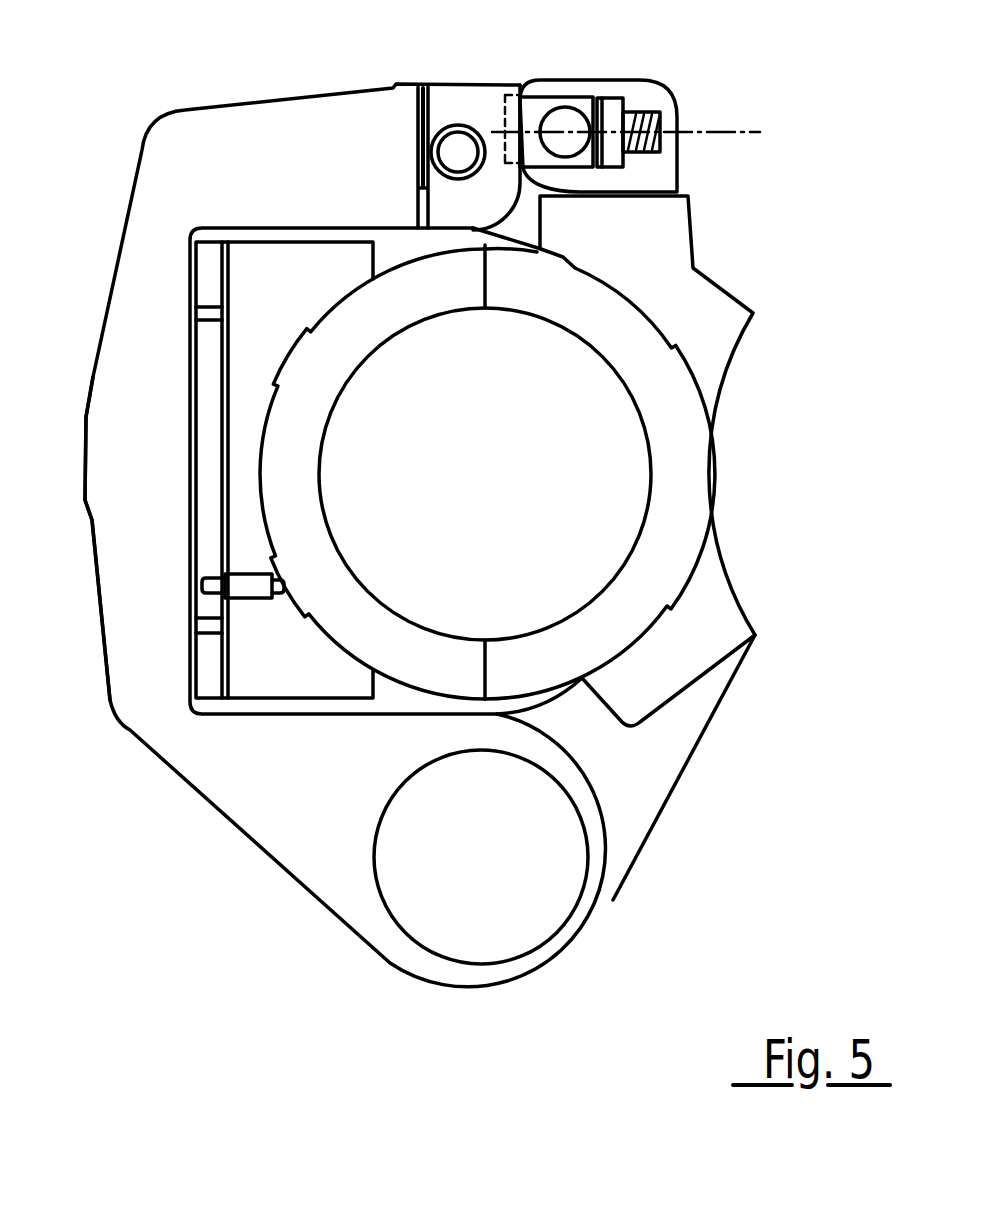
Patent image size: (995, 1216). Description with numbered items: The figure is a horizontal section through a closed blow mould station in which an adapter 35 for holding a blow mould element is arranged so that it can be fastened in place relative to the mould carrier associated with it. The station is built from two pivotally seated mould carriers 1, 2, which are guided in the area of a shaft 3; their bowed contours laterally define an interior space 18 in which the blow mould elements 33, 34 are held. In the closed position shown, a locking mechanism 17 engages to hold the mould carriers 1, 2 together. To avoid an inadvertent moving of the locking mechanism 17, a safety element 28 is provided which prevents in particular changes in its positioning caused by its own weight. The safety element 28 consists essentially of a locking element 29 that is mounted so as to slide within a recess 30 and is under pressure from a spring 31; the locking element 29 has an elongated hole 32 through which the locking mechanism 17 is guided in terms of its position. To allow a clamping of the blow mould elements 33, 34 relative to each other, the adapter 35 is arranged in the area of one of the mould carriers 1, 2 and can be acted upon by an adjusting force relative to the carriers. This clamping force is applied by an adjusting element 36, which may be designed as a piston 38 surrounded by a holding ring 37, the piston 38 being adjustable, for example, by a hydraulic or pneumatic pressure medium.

The mould carrier 1 is at (780, 503).
The mould carrier 2 is at (103, 530).
The shaft 3 is at (477, 930).
The locking mechanism 17 is at (454, 150).
The interior space 18 is at (485, 514).
The safety element 28 is at (590, 100).
The locking element 29 is at (560, 98).
The recess 30 is at (575, 88).
The spring 31 is at (650, 110).
The elongated hole 32 is at (600, 97).
The blow mould element 33 is at (323, 402).
The blow mould element 34 is at (655, 430).
The adapter 35 is at (277, 268).
The adjusting element 36 is at (205, 348).
The holding ring 37 is at (203, 257).
The piston 38 is at (200, 450).